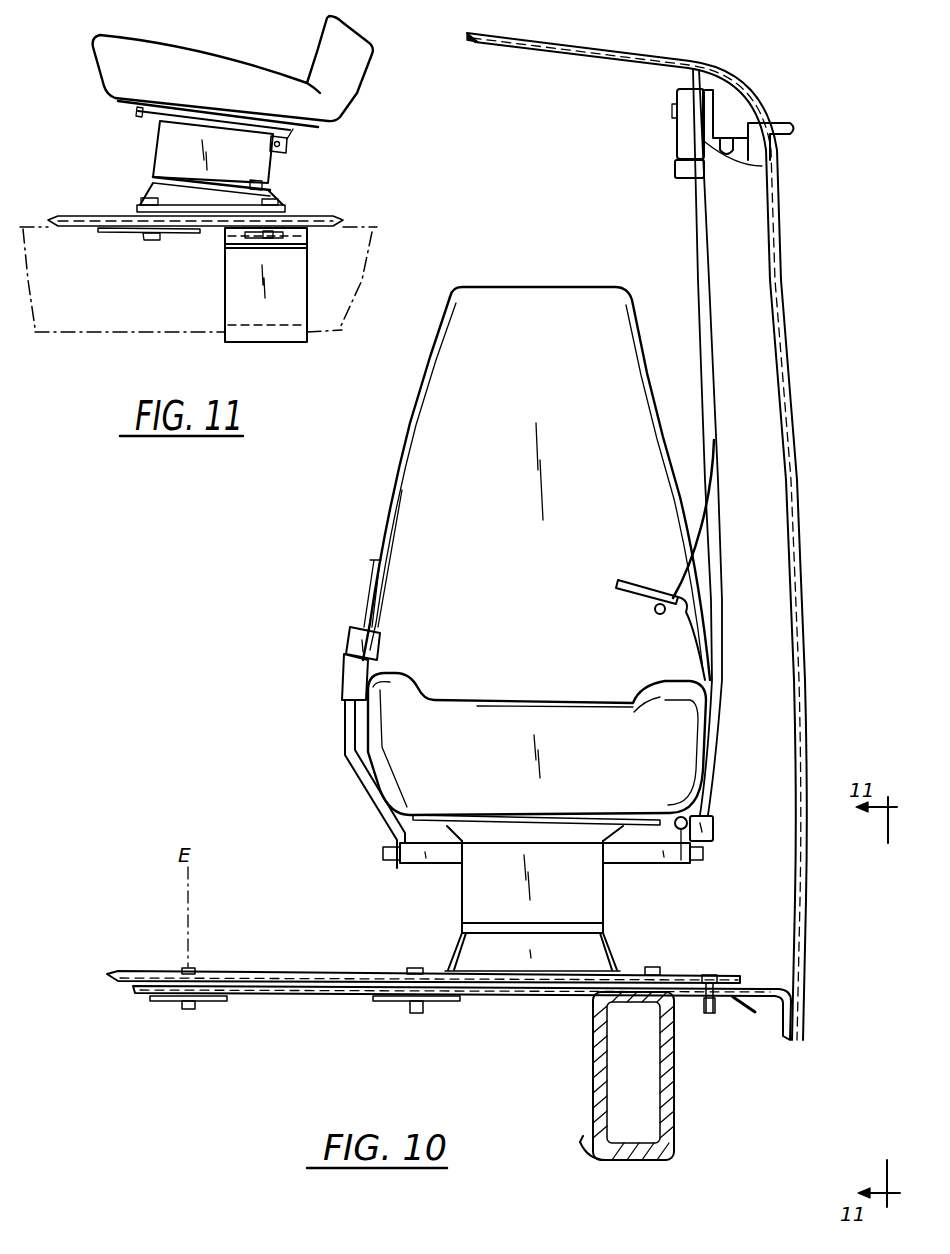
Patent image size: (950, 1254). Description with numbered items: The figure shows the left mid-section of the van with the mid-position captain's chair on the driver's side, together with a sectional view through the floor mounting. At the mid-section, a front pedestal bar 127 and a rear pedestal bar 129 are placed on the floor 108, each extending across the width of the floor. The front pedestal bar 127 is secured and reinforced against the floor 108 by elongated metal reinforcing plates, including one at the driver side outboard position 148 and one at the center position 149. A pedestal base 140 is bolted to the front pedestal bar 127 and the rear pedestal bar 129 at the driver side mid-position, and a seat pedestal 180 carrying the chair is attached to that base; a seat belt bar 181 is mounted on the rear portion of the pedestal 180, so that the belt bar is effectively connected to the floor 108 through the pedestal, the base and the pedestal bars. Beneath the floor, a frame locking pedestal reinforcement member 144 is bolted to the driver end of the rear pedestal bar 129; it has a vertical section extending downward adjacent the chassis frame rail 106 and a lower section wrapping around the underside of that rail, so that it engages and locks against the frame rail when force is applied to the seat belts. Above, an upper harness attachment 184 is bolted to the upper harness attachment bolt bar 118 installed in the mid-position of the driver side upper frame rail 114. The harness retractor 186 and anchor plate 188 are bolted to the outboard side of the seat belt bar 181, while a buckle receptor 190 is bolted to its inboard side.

In FIG. 11, the chassis frame rail 106 is at (193, 336).
In FIG. 10, the chassis frame rail 106 is at (590, 1074).
In FIG. 10, the floor 108 is at (353, 997).
In FIG. 10, the driver side upper frame rail 114 is at (764, 167).
In FIG. 10, the upper harness attachment bolt bar 118 is at (730, 134).
In FIG. 11, the front pedestal bar 127 is at (130, 217).
In FIG. 10, the front pedestal bar 127 is at (285, 978).
In FIG. 11, the rear pedestal bar 129 is at (298, 207).
In FIG. 11, the pedestal base 140 is at (152, 185).
In FIG. 10, the pedestal base 140 is at (453, 952).
In FIG. 11, the frame locking pedestal reinforcement member 144 is at (225, 289).
In FIG. 10, the frame locking pedestal reinforcement member 144 is at (681, 1096).
In FIG. 11, the front pedestal bar reinforcing plate 148 is at (120, 234).
In FIG. 10, the front pedestal bar reinforcing plate 149 is at (207, 1006).
In FIG. 11, the seat pedestal 180 is at (153, 137).
In FIG. 10, the seat pedestal 180 is at (607, 921).
In FIG. 11, the seat belt bar 181 is at (288, 147).
In FIG. 10, the seat belt bar 181 is at (413, 868).
In FIG. 10, the upper harness attachment 184 is at (677, 136).
In FIG. 10, the harness retractor 186 is at (714, 824).
In FIG. 10, the anchor plate 188 is at (675, 830).
In FIG. 10, the buckle receptor 190 is at (347, 668).